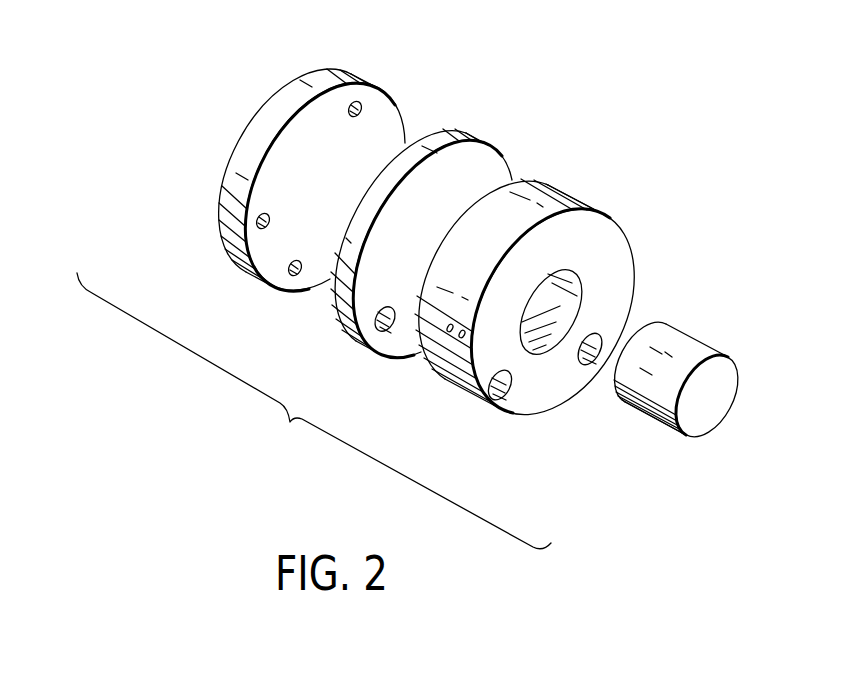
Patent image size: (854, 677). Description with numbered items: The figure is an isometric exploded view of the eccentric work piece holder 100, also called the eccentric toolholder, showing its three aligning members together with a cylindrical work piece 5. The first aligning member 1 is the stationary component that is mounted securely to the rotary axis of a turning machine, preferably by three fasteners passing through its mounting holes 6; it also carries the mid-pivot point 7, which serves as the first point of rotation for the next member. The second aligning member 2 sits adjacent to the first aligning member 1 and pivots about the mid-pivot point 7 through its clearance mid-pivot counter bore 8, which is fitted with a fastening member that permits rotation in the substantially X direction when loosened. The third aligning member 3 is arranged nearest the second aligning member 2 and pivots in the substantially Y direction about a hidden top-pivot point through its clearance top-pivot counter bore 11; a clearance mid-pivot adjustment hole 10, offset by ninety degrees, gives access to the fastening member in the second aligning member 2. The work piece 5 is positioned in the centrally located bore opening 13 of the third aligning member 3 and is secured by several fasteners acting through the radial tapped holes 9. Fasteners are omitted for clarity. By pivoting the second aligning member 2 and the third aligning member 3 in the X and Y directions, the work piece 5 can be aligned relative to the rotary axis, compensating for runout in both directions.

The first aligning member 1 is at (386, 86).
The second aligning member 2 is at (489, 150).
The third aligning member 3 is at (603, 214).
The work piece 5 is at (690, 341).
The mounting holes 6 is at (349, 103).
The mid-pivot point 7 is at (291, 277).
The mid-pivot counter bore 8 is at (376, 326).
The radial tapped holes 9 is at (460, 337).
The mid-pivot adjustment hole 10 is at (496, 401).
The top-pivot counter bore 11 is at (588, 367).
The bore opening 13 is at (581, 296).
The eccentric work piece holder 100 is at (314, 411).